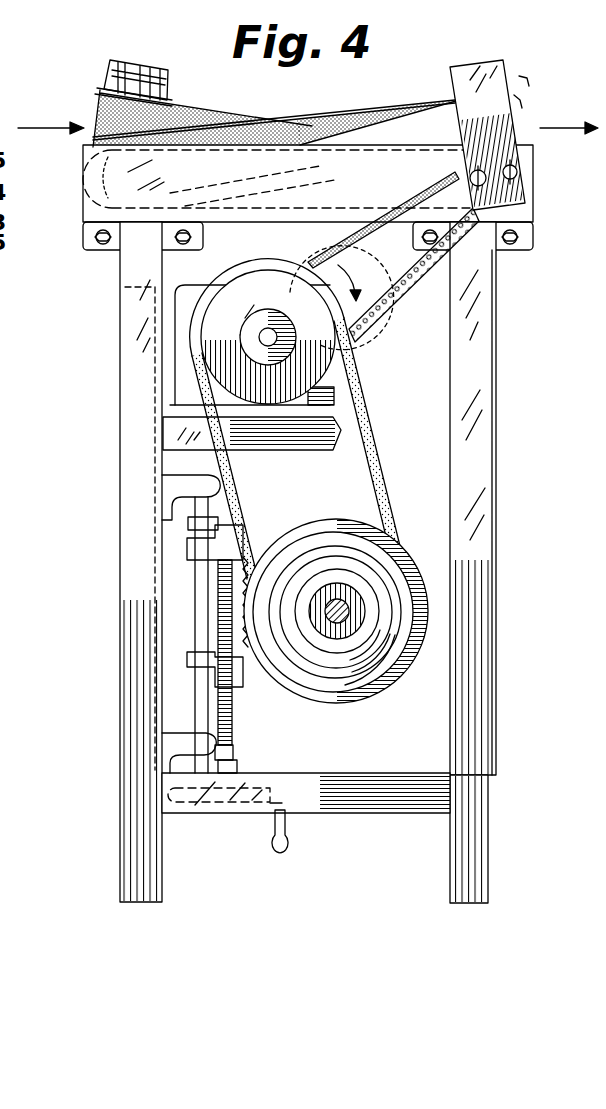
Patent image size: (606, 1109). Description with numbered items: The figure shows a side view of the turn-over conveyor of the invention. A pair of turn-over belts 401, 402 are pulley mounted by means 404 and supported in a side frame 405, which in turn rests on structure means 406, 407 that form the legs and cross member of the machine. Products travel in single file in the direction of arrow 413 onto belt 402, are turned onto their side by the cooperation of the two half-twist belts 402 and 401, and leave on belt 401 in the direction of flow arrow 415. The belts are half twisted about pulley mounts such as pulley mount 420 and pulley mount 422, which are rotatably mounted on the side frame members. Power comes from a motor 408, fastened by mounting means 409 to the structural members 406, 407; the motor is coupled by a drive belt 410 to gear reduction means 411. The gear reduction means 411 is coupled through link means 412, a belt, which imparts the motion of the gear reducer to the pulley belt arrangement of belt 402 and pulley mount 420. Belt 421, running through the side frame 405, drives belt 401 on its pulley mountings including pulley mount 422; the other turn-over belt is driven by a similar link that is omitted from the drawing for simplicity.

The turn-over belt 401 is at (222, 122).
The turn-over belt 402 is at (390, 137).
The pulley mounting means 404 is at (520, 62).
The side frame 405 is at (385, 235).
The structure means 406 is at (133, 715).
The structure means 407 is at (395, 787).
The motor 408 is at (356, 668).
The motor mounting means 409 is at (250, 697).
The drive belt 410 is at (385, 478).
The gear reduction means 411 is at (298, 416).
The link means 412 is at (400, 300).
The direction arrow 413 is at (50, 127).
The flow arrow 415 is at (560, 128).
The pulley mount 420 is at (512, 88).
The belt 421 is at (310, 235).
The pulley mount 422 is at (105, 88).